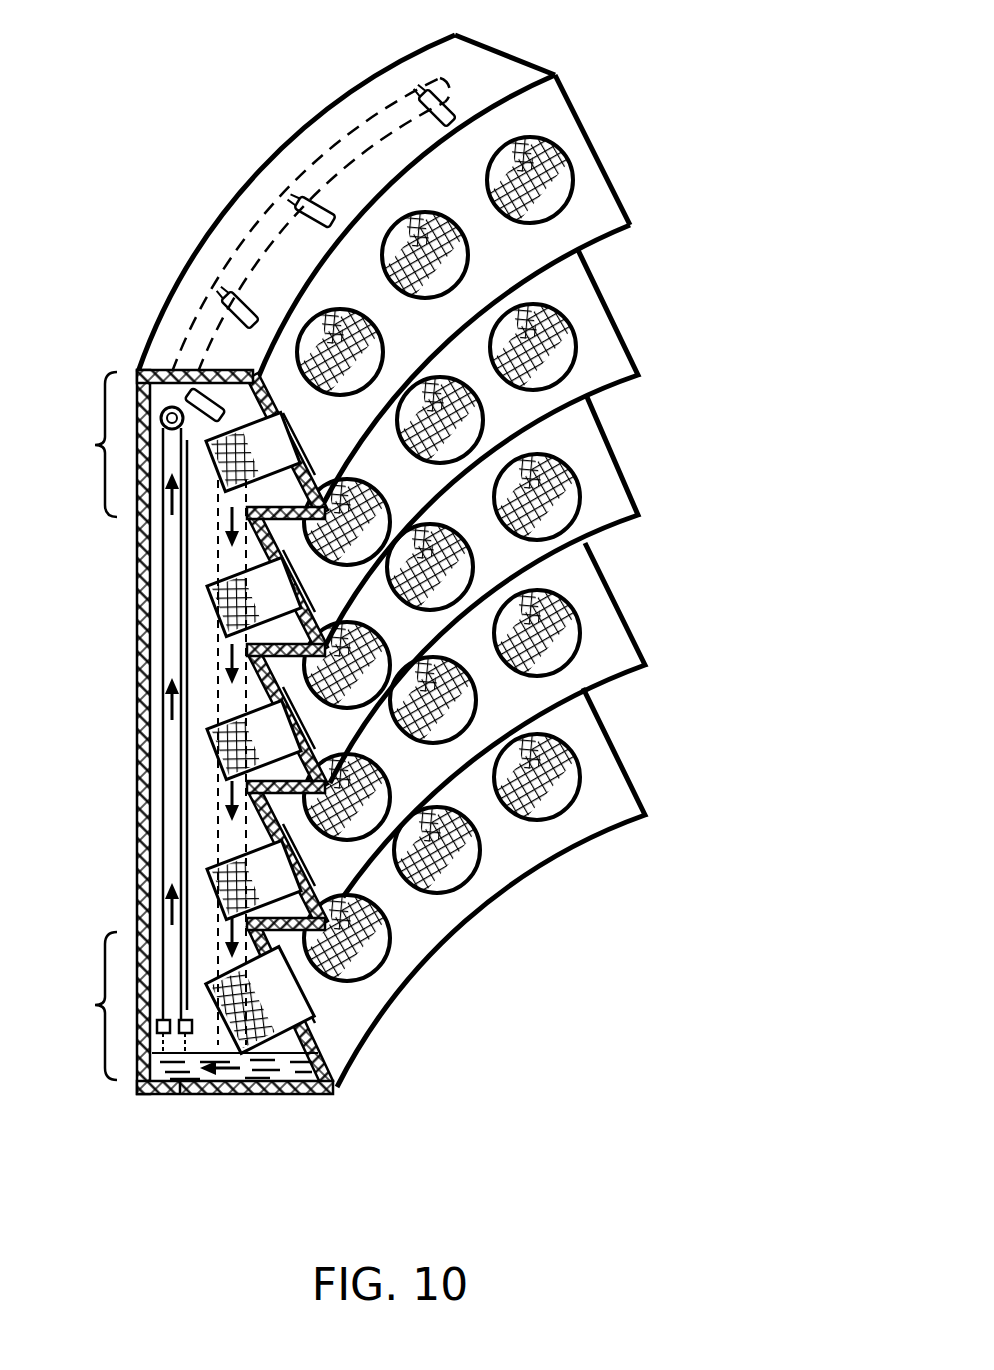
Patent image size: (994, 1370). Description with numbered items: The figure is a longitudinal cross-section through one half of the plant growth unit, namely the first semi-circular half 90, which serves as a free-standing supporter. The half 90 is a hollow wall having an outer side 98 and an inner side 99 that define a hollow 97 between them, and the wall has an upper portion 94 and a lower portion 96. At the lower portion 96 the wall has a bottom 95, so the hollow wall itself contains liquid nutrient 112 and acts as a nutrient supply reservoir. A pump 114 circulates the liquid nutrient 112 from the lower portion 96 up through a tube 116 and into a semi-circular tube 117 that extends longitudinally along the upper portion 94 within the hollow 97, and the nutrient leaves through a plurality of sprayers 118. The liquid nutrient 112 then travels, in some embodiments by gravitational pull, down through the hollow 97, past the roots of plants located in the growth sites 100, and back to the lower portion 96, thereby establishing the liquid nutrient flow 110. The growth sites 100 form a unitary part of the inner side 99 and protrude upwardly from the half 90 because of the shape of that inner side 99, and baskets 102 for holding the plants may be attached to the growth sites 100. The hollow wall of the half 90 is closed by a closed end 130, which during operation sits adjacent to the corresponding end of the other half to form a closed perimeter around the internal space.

The first semi-circular half 90 is at (280, 157).
The closed end 130 is at (523, 62).
The semi-circular tube 117 is at (382, 113).
The sprayers 118 is at (258, 298).
The upper portion 94 is at (133, 444).
The lower portion 96 is at (78, 1006).
The tube 116 is at (165, 598).
The hollow 97 is at (185, 633).
The outer side 98 is at (140, 728).
The inner side 99 is at (333, 633).
The growth sites 100 is at (365, 942).
The baskets 102 is at (470, 853).
The liquid nutrient flow 110 is at (238, 1093).
The liquid nutrient 112 is at (282, 1093).
The pump 114 is at (160, 1030).
The bottom 95 is at (187, 1097).